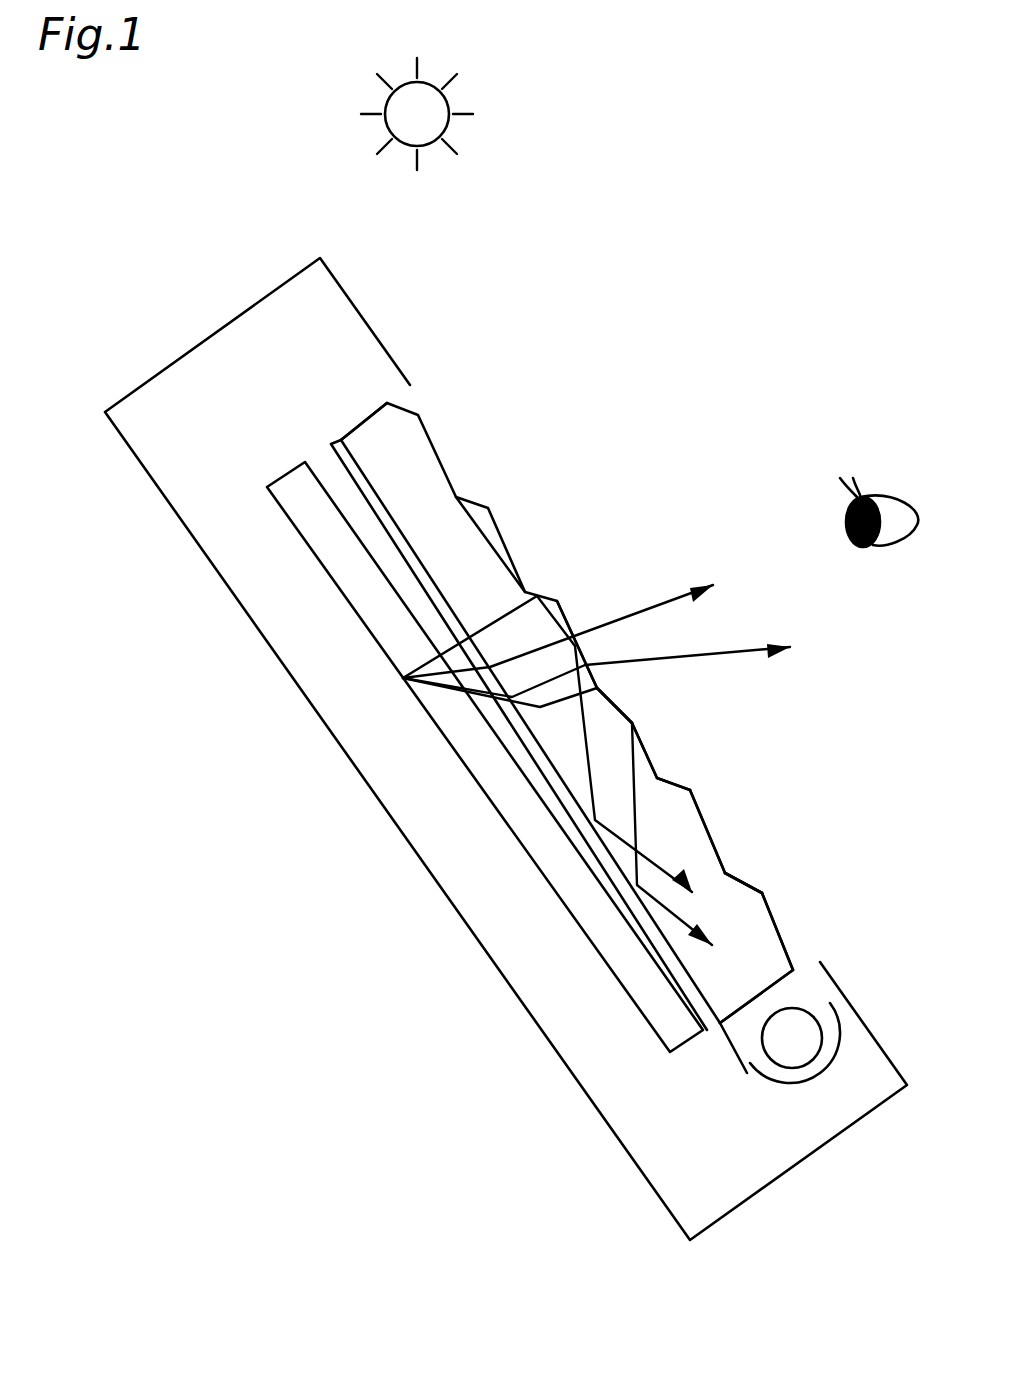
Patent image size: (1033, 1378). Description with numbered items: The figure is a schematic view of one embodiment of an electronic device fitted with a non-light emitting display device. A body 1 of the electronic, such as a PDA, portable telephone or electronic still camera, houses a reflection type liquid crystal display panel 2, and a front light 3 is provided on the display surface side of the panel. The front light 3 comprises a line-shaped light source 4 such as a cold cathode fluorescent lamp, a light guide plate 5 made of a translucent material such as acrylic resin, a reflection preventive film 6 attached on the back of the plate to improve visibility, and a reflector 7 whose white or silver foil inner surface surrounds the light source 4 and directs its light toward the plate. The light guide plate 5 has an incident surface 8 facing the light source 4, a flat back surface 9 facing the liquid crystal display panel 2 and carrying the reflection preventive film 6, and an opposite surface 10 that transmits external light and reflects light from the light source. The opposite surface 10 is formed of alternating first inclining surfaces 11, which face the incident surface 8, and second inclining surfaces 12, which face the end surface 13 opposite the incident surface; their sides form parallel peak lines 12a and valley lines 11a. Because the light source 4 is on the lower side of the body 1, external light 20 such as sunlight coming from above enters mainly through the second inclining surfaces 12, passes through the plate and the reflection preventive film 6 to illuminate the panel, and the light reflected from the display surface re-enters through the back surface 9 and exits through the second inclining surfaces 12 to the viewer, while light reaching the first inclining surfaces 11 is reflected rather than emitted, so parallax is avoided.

The body 1 is at (185, 527).
The reflection type liquid crystal display panel 2 is at (527, 850).
The front light 3 is at (800, 963).
The line-shaped light source 4 is at (747, 1077).
The light guide plate 5 is at (407, 413).
The reflection preventive film 6 is at (324, 450).
The reflector 7 is at (778, 1097).
The incident surface 8 is at (767, 987).
The back surface 9 is at (367, 483).
The opposite surface 10 is at (515, 528).
The first inclining surface 11 is at (597, 687).
The valley line 11a is at (657, 778).
The second inclining surface 12 is at (635, 728).
The peak line 12a is at (623, 698).
The opposite surface to the incident surface 13 is at (358, 420).
The external light 20 is at (438, 110).